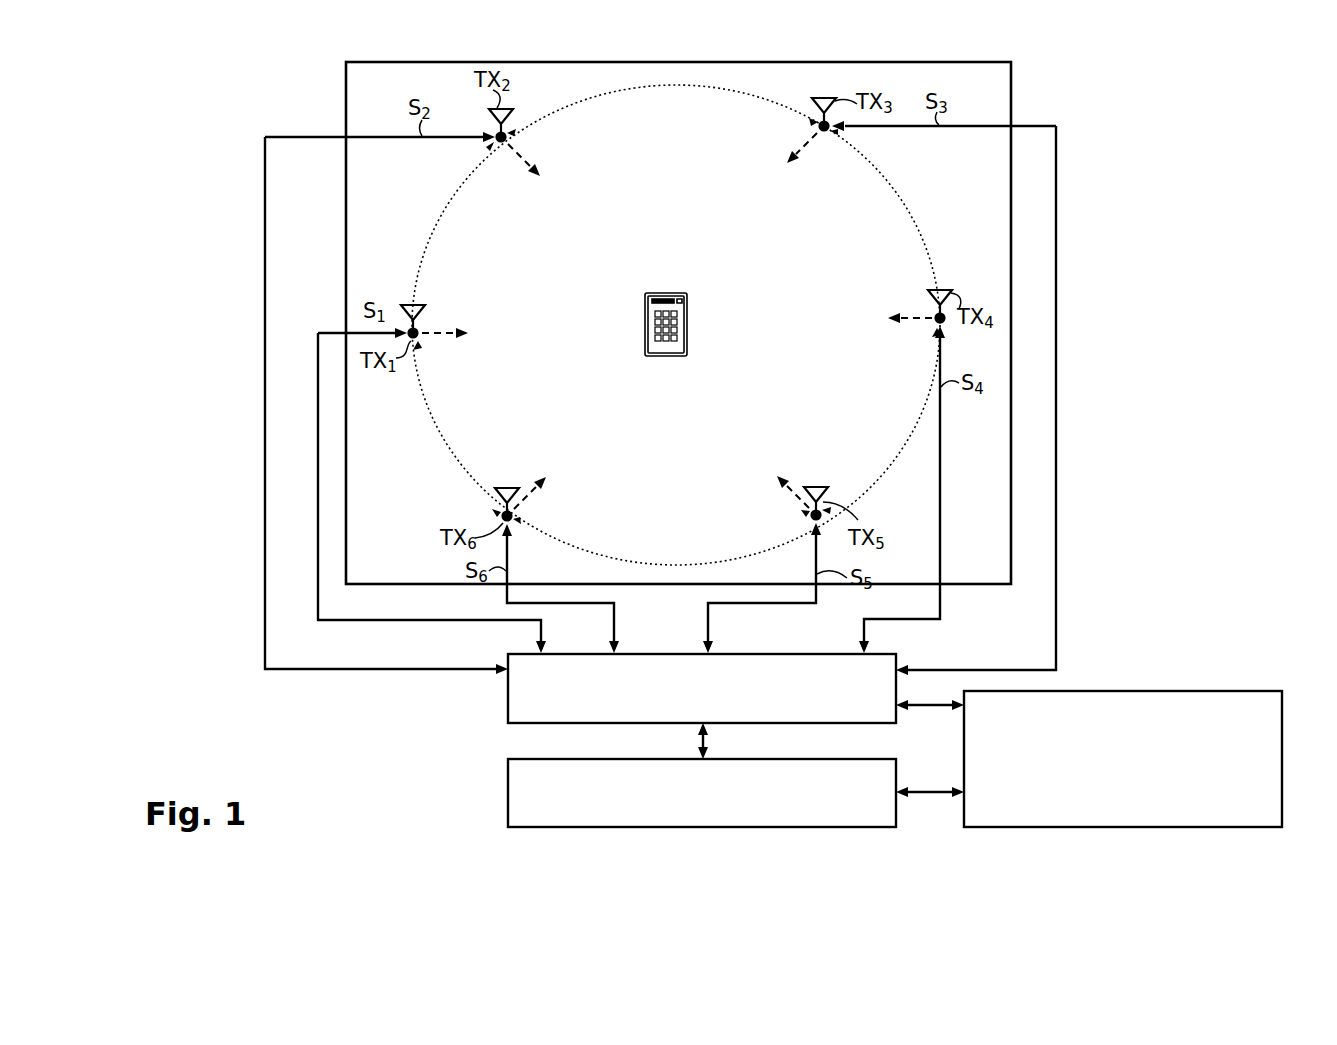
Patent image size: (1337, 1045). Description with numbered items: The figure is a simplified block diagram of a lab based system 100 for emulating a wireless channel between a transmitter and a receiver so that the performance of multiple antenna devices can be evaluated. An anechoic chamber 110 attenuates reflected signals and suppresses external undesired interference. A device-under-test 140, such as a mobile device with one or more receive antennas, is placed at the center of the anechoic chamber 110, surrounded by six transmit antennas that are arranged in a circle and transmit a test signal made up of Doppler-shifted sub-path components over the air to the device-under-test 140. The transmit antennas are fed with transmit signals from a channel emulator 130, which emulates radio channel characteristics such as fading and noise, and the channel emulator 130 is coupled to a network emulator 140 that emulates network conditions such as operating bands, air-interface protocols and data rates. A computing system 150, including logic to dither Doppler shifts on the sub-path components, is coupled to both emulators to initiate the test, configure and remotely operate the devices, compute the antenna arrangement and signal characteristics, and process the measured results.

The lab based system 100 is at (1236, 81).
The anechoic chamber 110 is at (910, 62).
The channel emulator 130 is at (508, 706).
The DuT / network emulator 140 is at (638, 331).
The computing system 150 is at (1205, 690).